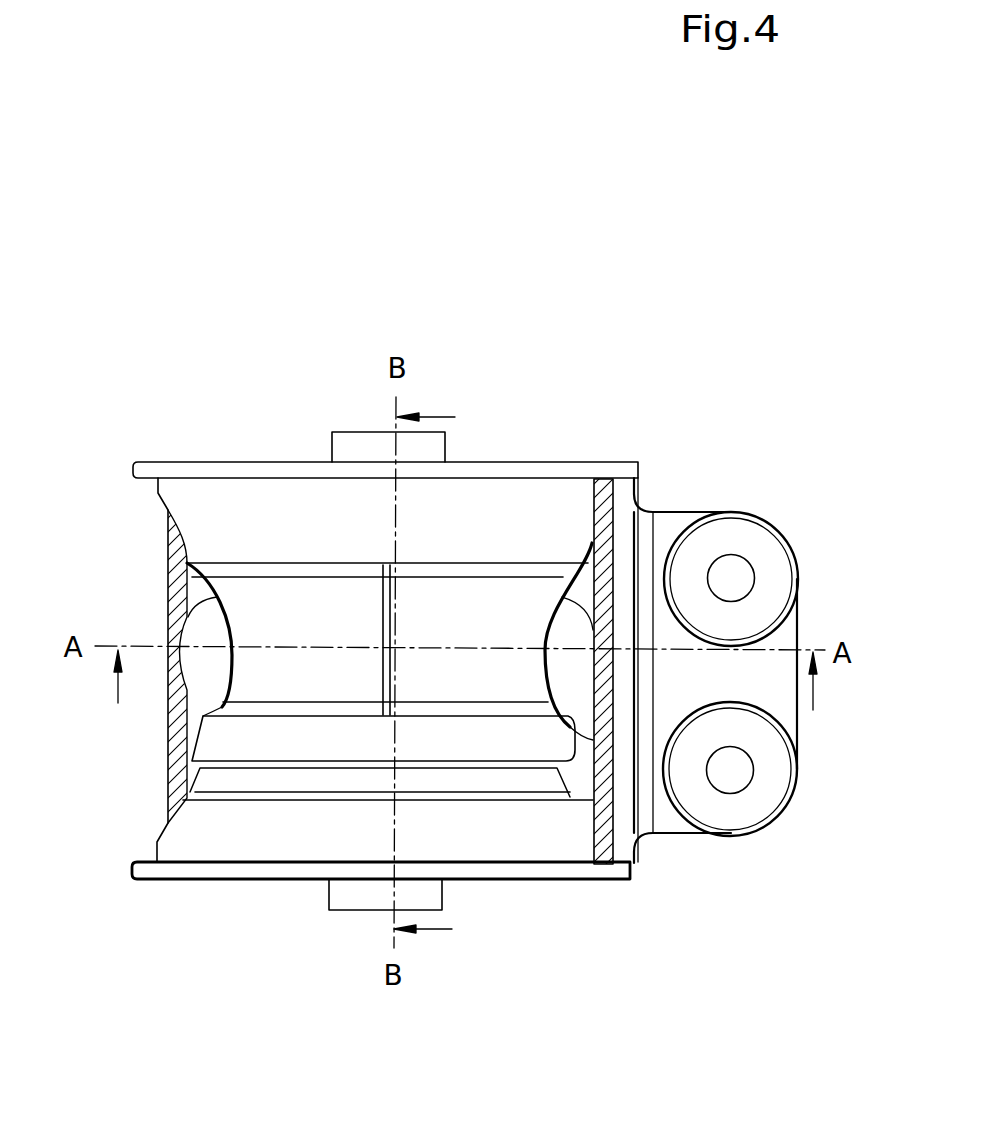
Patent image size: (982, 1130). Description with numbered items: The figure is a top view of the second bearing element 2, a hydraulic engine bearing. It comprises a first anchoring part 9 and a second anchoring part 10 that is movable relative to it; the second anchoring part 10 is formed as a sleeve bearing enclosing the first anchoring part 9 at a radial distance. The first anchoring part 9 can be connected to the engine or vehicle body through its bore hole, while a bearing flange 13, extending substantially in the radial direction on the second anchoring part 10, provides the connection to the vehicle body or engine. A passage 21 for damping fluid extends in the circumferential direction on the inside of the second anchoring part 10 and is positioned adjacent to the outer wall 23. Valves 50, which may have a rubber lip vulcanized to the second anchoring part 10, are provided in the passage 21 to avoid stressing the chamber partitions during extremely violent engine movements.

The second bearing element 2 is at (549, 907).
The first anchoring part 9 is at (353, 895).
The second anchoring part 10 is at (195, 868).
The bearing flange 13 is at (708, 813).
The passage 21 is at (247, 600).
The outer wall 23 is at (612, 508).
The valves 50 is at (383, 683).